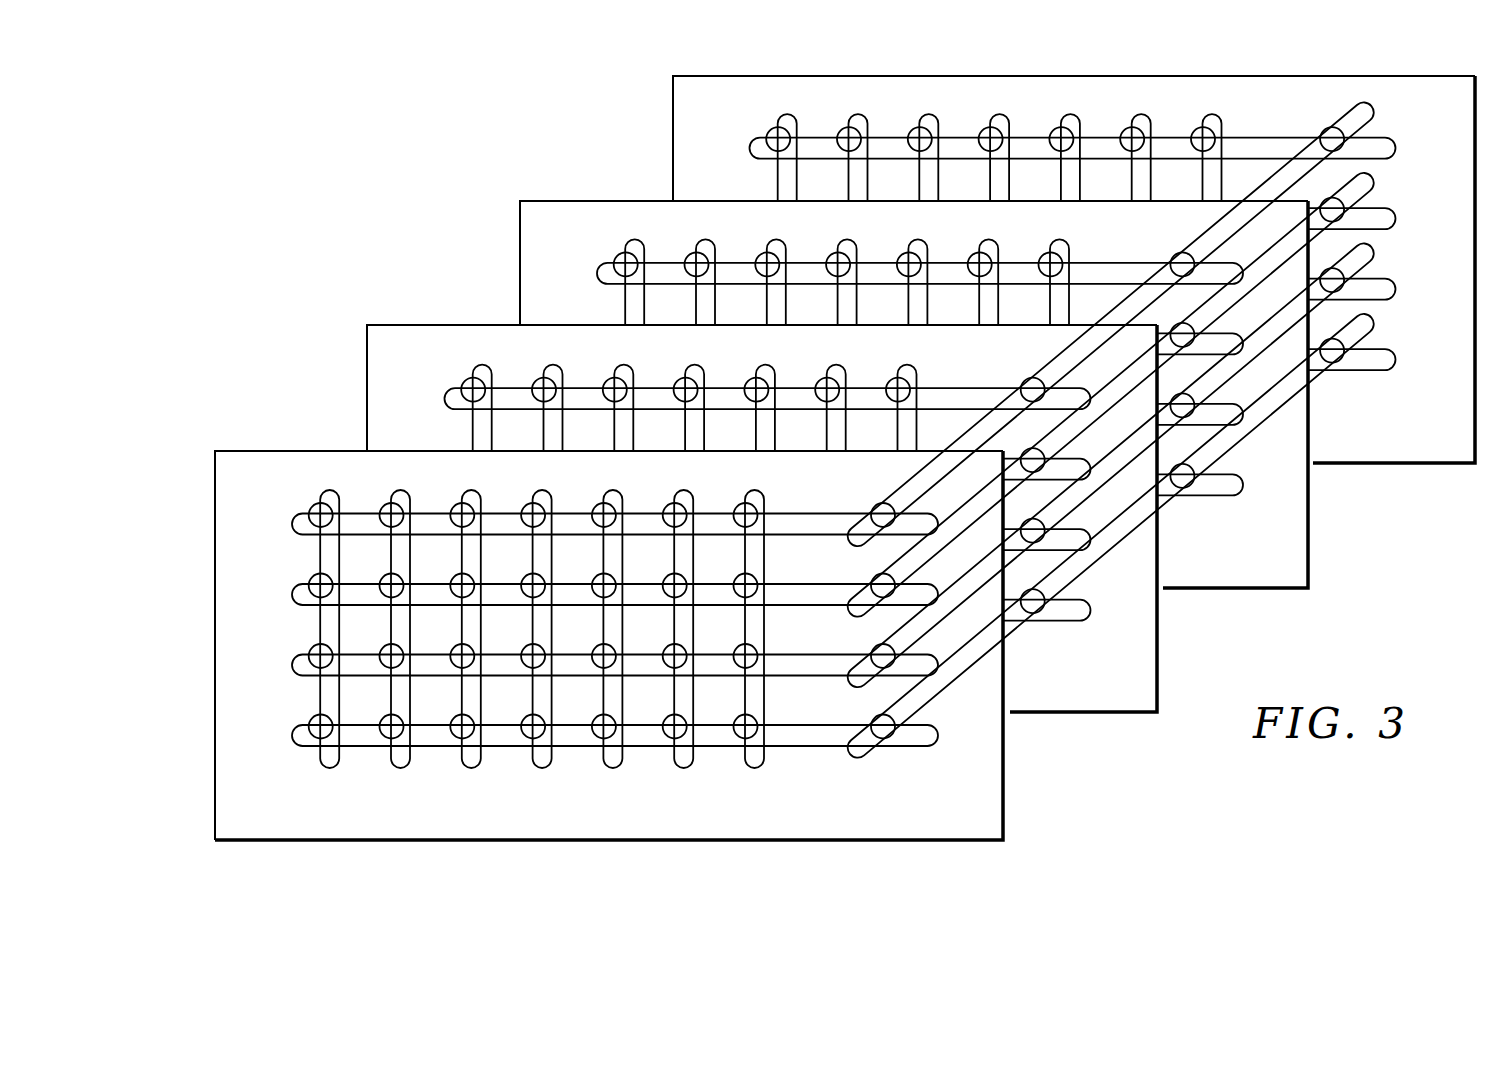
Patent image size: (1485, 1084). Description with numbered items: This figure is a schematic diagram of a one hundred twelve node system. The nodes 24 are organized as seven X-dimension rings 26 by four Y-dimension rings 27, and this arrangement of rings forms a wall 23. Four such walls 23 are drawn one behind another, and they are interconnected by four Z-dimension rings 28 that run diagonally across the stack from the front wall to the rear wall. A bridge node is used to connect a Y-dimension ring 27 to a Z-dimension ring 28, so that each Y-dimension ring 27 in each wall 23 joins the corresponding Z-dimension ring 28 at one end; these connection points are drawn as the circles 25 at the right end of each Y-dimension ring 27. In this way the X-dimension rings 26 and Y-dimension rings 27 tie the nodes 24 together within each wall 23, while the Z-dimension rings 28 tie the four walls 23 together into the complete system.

The wall 23 is at (215, 512).
The node 24 is at (467, 381).
The bus contact 25 is at (1323, 128).
The X-dimension ring 26 is at (328, 768).
The Y-dimension ring 27 is at (292, 521).
The Z-dimension ring 28 is at (1388, 115).